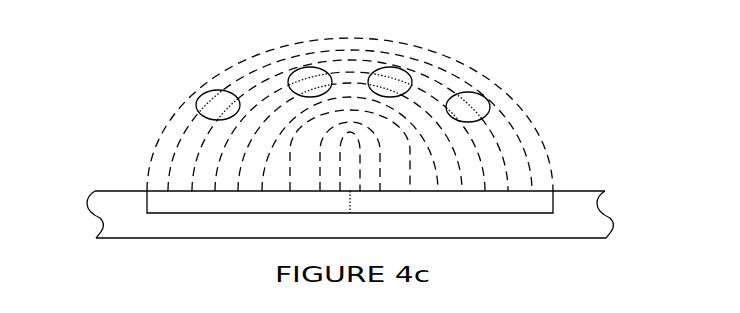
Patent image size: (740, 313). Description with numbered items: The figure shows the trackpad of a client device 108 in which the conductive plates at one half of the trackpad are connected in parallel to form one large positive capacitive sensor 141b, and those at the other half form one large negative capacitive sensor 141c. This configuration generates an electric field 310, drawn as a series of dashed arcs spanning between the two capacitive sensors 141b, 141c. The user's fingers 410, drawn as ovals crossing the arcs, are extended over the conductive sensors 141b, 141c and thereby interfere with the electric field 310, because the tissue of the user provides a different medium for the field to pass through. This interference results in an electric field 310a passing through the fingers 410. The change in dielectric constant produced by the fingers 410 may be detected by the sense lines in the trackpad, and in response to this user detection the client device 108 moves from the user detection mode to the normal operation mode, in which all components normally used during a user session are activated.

The client device 108 is at (575, 215).
The positive capacitive sensor 141b is at (190, 202).
The negative capacitive sensor 141c is at (533, 202).
The electric field 310 is at (337, 106).
The electric field passing through the hand 310a is at (230, 100).
The fingers 410 is at (205, 97).